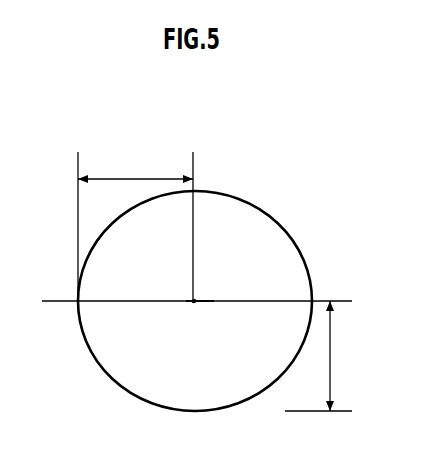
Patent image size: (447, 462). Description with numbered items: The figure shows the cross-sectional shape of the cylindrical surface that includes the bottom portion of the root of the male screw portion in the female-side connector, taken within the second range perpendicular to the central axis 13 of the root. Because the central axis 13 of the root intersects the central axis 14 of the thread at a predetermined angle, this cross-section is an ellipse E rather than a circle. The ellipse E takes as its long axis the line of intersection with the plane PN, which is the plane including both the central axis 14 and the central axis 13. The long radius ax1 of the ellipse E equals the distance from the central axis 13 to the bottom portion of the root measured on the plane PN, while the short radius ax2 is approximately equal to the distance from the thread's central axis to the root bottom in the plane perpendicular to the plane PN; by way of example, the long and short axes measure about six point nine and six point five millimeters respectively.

The central axis of the root 13 is at (196, 305).
The central axis of the thread 14 is at (208, 301).
The ellipse E is at (94, 361).
The plane PN is at (340, 301).
The long radius ax1 is at (135, 227).
The short radius ax2 is at (326, 356).